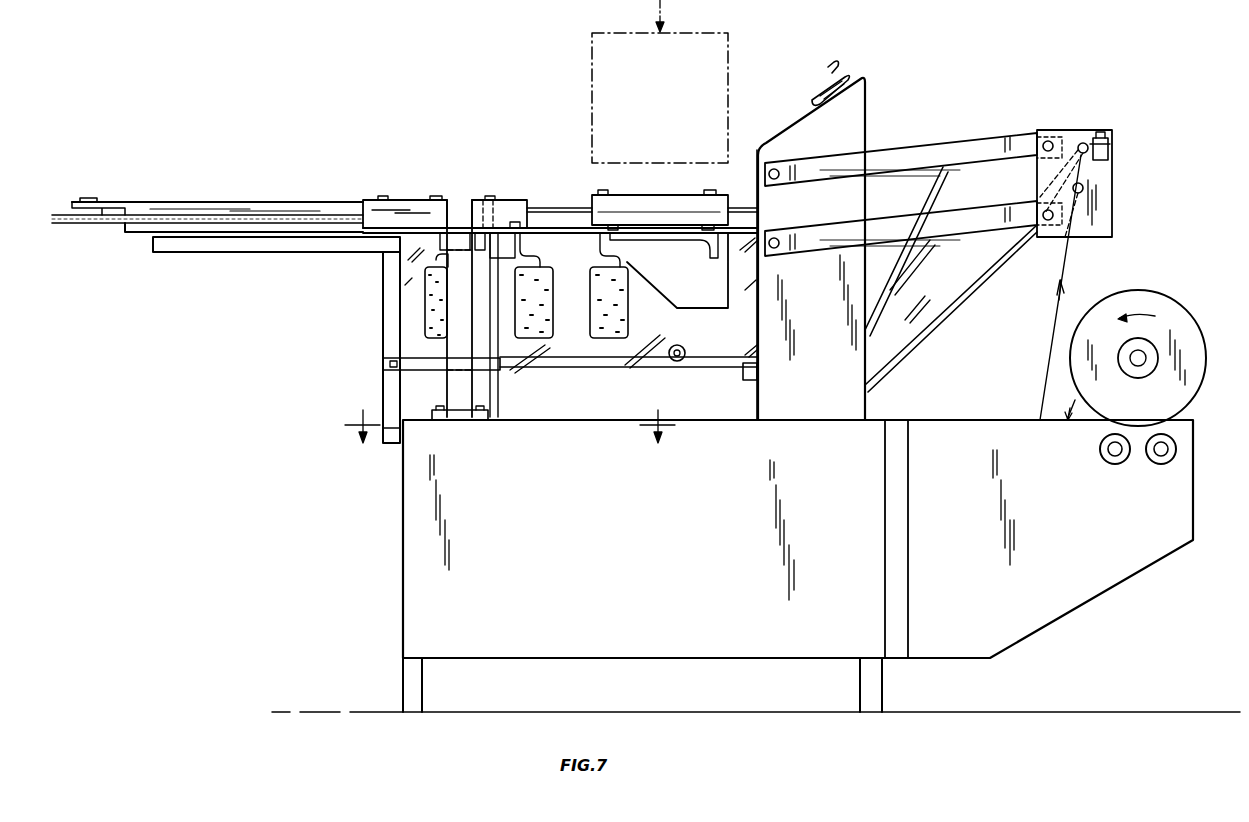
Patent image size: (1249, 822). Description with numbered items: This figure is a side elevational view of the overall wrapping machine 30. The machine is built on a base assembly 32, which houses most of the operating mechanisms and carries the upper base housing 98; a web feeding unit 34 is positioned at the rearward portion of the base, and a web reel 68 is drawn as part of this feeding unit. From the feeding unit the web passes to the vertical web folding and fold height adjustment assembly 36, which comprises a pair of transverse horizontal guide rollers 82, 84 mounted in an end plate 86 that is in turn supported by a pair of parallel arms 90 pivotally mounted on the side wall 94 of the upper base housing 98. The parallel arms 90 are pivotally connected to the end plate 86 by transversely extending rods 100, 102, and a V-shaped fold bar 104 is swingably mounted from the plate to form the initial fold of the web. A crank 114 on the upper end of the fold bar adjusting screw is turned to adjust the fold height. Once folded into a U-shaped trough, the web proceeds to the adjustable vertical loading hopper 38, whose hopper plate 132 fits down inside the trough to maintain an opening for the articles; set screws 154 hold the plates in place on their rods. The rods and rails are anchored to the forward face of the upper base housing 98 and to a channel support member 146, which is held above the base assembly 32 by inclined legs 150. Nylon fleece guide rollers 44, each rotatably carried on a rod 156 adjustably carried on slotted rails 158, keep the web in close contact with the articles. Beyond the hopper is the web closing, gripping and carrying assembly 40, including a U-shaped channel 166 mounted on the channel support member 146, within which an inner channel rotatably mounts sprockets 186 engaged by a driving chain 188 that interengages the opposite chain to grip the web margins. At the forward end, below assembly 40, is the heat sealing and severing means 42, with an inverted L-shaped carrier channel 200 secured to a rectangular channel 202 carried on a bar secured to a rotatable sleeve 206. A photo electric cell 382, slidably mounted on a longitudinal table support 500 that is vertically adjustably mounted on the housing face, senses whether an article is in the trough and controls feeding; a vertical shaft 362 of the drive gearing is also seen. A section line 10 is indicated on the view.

The section line 10 is at (508, 428).
The wrapping machine 30 is at (368, 488).
The base assembly 32 is at (612, 529).
The web feeding unit 34 is at (1178, 293).
The vertical web folding and fold height adjustment assembly 36 is at (1012, 126).
The adjustable vertical loading hopper 38 is at (583, 188).
The web closing, gripping and carrying assembly 40 is at (300, 198).
The heat sealing and severing means 42 is at (360, 282).
The nylon fleece guide rollers 44 is at (430, 328).
The reel 68 is at (1188, 332).
The transverse horizontal guide roller 82 is at (1087, 188).
The transverse horizontal guide roller 84 is at (1100, 135).
The end plate 86 is at (1105, 222).
The parallel arms 90 is at (900, 223).
The side wall 94 is at (828, 298).
The upper base housing 98 is at (875, 104).
The transversely extending rod 100 is at (1052, 140).
The transversely extending rod 102 is at (1047, 227).
The V-shaped fold bar 104 is at (925, 318).
The crank 114 is at (815, 93).
The hopper plate 132 is at (700, 295).
The channel support member 146 is at (424, 200).
The inclined legs 150 is at (460, 208).
The set screws 154 is at (712, 190).
The rod 156 is at (520, 250).
The rails 158 is at (571, 229).
The U-shaped channel 166 is at (272, 209).
The sprockets 186 is at (68, 216).
The driving chain 188 is at (200, 216).
The inverted L-shaped carrier channel 200 is at (385, 320).
The rectangular channel 202 is at (423, 365).
The rotatable sleeve 206 is at (498, 398).
The vertical shaft 362 is at (495, 198).
The photo electric cell 382 is at (684, 360).
The longitudinal table support 500 is at (730, 370).